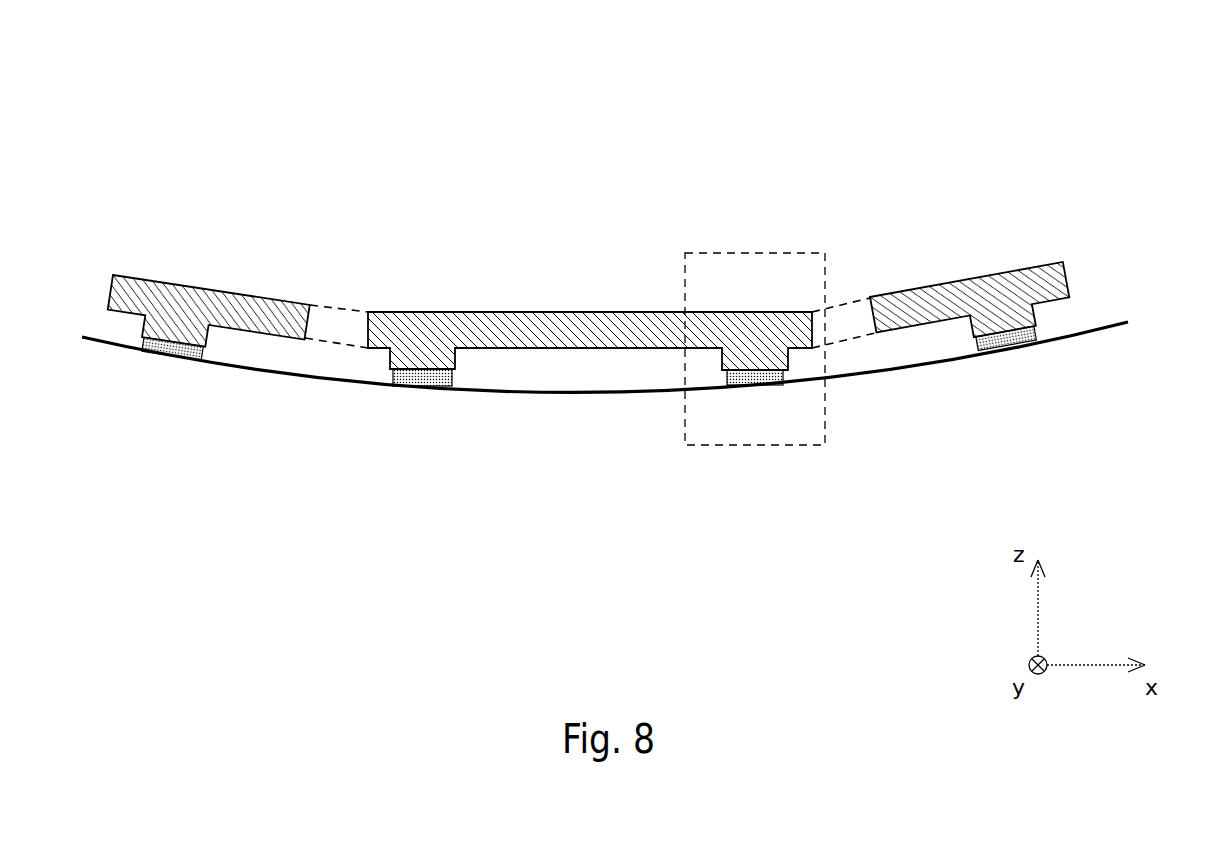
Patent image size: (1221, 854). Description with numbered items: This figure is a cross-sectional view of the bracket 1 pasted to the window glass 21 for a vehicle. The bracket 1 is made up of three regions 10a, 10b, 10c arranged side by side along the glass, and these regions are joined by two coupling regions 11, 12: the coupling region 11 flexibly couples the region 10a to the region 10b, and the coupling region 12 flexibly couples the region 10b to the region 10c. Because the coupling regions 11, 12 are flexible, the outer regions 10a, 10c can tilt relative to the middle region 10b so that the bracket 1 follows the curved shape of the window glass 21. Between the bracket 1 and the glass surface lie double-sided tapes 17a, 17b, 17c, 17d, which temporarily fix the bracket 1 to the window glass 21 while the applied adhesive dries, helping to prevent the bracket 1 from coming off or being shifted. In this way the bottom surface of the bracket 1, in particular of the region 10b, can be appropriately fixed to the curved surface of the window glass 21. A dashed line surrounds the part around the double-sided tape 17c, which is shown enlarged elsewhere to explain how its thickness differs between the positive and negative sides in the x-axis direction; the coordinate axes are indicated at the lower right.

The bracket 1 is at (970, 102).
The region 10a is at (182, 283).
The region 10b is at (532, 312).
The region 10c is at (990, 275).
The coupling region 11 is at (345, 303).
The coupling region 12 is at (850, 300).
The double-sided tape 17a is at (167, 358).
The double-sided tape 17b is at (425, 390).
The double-sided tape 17c is at (752, 387).
The double-sided tape 17d is at (1000, 355).
The window glass for a vehicle 21 is at (1090, 335).